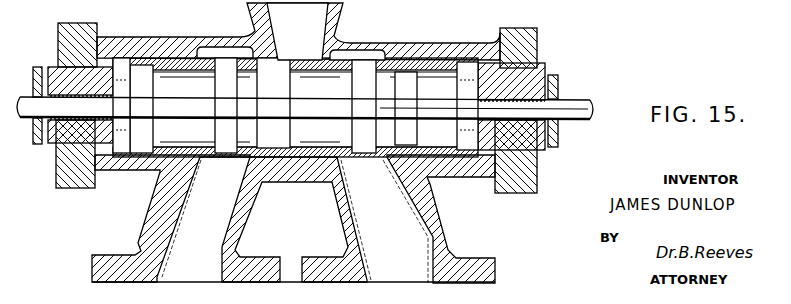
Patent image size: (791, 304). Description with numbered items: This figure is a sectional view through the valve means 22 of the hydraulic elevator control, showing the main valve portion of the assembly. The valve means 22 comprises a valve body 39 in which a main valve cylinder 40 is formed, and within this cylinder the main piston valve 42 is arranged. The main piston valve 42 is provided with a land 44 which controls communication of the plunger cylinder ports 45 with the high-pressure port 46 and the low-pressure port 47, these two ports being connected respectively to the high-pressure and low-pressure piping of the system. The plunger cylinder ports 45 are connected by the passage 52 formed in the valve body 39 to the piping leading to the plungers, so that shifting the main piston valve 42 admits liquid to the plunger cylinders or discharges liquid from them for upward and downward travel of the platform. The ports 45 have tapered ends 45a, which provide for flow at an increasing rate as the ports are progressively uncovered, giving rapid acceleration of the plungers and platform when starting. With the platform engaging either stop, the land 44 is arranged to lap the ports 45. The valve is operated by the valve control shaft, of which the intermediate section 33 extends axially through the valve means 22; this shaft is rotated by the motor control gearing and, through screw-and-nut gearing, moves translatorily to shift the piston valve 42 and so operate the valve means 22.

The valve means 22 is at (160, 33).
The intermediate section 33 is at (22, 96).
The valve body 39 is at (378, 39).
The main valve cylinder 40 is at (337, 150).
The main piston valve 42 is at (438, 108).
The land 44 is at (262, 123).
The plunger cylinder ports 45 is at (289, 63).
The tapered ends 45a is at (291, 148).
The high-pressure port 46 is at (176, 219).
The low-pressure port 47 is at (346, 231).
The passage 52 is at (252, 16).